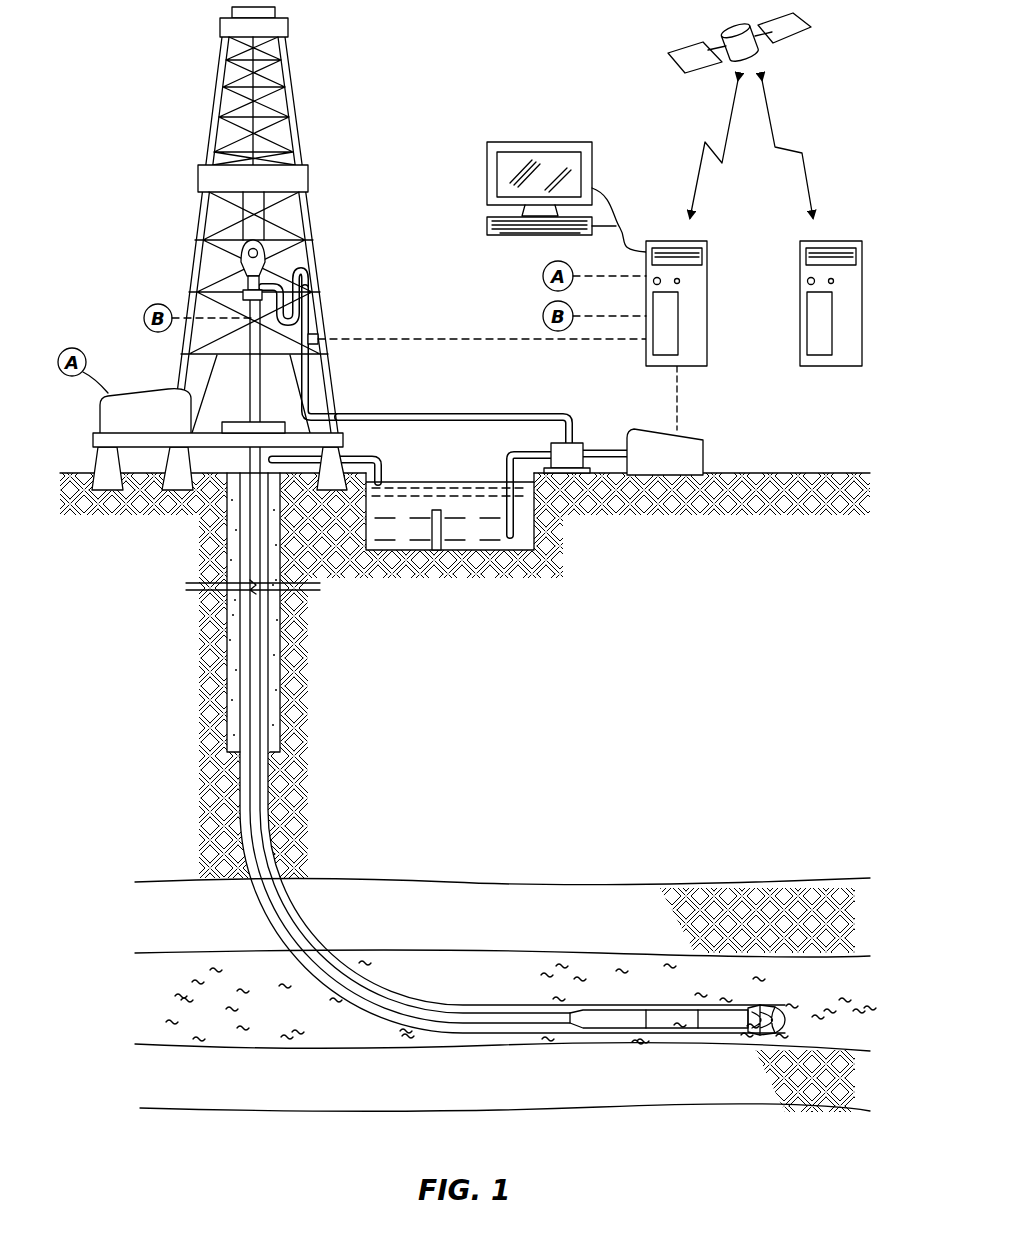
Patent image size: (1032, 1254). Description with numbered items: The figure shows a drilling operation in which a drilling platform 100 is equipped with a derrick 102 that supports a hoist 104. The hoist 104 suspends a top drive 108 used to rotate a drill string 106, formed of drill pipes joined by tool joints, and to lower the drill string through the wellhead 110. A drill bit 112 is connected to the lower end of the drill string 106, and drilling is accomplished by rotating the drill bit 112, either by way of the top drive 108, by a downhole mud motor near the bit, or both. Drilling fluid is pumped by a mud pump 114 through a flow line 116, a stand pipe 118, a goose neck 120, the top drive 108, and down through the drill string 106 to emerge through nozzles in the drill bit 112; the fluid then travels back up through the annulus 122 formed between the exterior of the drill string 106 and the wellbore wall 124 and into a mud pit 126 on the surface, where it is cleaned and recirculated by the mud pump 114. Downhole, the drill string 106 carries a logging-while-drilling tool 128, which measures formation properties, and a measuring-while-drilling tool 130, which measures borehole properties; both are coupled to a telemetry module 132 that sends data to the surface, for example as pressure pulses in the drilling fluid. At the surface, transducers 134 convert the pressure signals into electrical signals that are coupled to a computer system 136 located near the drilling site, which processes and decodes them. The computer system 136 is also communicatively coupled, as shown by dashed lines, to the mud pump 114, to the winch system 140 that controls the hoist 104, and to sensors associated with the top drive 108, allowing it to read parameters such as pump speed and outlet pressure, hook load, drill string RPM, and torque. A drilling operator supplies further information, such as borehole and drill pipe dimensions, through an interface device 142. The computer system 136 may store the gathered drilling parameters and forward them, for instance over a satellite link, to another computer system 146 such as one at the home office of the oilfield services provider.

The drilling platform 100 is at (345, 440).
The derrick 102 is at (287, 57).
The hoist 104 is at (241, 256).
The drill string 106 is at (548, 1018).
The top drive 108 is at (245, 297).
The wellhead 110 is at (277, 421).
The drill bit 112 is at (766, 1010).
The mud pump 114 is at (703, 437).
The flow line 116 is at (483, 414).
The stand pipe 118 is at (310, 305).
The goose neck 120 is at (305, 262).
The annulus 122 is at (306, 922).
The wellbore wall 124 is at (277, 818).
The mud pit 126 is at (418, 482).
The logging-while-drilling tool 128 is at (678, 1020).
The measuring-while-drilling tool 130 is at (710, 1020).
The telemetry module 132 is at (625, 1018).
The transducers 134 is at (319, 337).
The computer system 136 is at (690, 241).
The winch system 140 is at (133, 391).
The interface device 142 is at (550, 142).
The computer system 146 is at (838, 241).